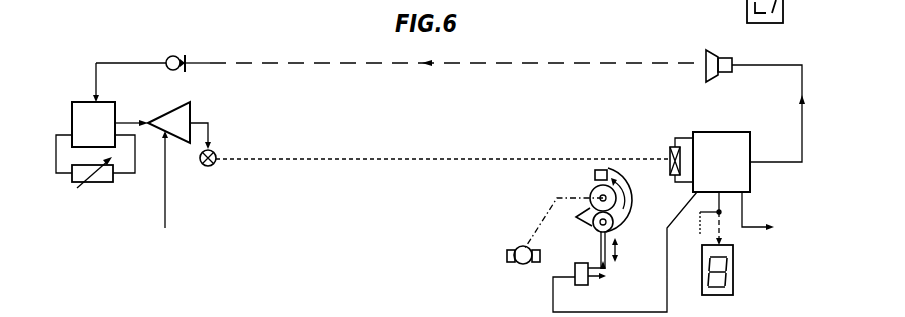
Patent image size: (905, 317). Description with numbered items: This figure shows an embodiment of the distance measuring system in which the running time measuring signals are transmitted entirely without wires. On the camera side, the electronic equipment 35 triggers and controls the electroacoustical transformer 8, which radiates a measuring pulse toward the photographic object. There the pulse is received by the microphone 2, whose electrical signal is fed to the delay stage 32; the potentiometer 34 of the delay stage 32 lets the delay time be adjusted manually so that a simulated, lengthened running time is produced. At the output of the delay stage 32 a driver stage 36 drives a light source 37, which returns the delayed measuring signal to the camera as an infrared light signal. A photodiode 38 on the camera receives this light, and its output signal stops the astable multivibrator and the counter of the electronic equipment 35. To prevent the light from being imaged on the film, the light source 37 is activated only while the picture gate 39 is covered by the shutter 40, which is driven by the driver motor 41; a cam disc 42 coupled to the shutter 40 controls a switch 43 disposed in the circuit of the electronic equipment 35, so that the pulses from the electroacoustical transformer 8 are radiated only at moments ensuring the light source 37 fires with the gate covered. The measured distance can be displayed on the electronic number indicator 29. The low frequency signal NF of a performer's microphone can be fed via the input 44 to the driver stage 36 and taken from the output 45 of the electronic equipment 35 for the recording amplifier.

The microphone 2 is at (167, 57).
The electroacoustical transformer 8 is at (725, 58).
The electronic number indicator 29 is at (733, 270).
The delay stage 32 is at (83, 113).
The potentiometer 34 is at (104, 183).
The electronic equipment 35 is at (727, 134).
The driver stage 36 is at (172, 117).
The light source 37 is at (215, 150).
The photodiode 38 is at (668, 153).
The picture gate 39 is at (595, 175).
The shutter 40 is at (636, 198).
The driver motor 41 is at (519, 250).
The cam disc 42 is at (614, 226).
The switch 43 is at (580, 263).
The input 44 is at (165, 201).
The output 45 is at (757, 223).